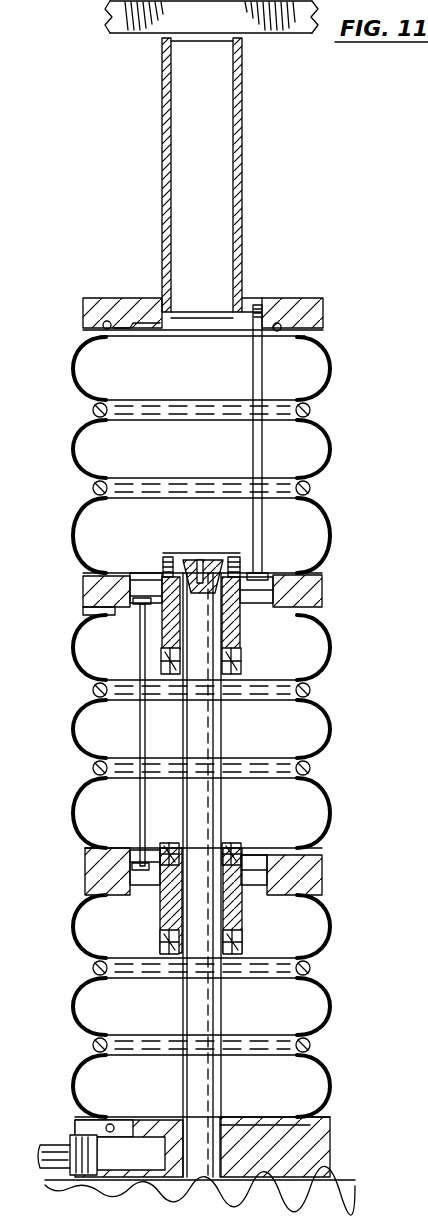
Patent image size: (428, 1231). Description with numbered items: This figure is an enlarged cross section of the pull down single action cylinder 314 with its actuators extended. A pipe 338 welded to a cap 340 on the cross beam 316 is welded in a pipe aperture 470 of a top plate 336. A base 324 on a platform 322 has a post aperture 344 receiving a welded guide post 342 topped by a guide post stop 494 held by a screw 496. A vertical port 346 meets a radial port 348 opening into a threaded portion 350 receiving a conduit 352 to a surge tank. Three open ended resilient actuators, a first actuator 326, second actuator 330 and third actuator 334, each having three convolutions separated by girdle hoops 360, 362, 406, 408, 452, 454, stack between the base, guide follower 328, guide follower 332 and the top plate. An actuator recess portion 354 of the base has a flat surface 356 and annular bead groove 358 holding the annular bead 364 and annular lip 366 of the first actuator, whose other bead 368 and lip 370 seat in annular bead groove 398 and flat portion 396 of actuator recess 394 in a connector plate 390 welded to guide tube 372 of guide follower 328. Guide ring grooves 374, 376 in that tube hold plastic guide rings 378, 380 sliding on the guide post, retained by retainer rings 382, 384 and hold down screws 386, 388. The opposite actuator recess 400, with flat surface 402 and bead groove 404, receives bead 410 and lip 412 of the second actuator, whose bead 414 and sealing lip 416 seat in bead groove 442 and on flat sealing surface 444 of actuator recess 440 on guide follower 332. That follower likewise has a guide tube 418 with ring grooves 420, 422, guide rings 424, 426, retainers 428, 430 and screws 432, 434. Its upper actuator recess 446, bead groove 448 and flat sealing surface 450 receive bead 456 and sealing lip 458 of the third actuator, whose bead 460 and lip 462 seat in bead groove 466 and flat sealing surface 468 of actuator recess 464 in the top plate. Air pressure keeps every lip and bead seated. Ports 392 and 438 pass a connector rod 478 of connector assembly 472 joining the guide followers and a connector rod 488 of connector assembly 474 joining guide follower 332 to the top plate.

The upper end assembly 314 is at (81, 297).
The upper support plate 316 is at (123, 28).
The base support 322 is at (346, 1184).
The base plate 324 is at (336, 1150).
The lower bellows section 326 is at (72, 1007).
The lower intermediate plate 328 is at (84, 849).
The middle bellows section 330 is at (76, 812).
The upper intermediate plate 332 is at (81, 592).
The upper bellows section 334 is at (76, 377).
The upper end plate 336 is at (81, 311).
The tube 338 is at (243, 101).
The tube upper end 340 is at (242, 38).
The central rod 342 is at (224, 1020).
The rod lower end 344 is at (221, 1156).
The base plate recess 346 is at (150, 1140).
The insert block 348 is at (131, 1153).
The seal 350 is at (110, 1127).
The fitting 352 is at (44, 1152).
The bellows lower end 354 is at (230, 1125).
The clamp ring 356 is at (288, 1125).
The bead 358 is at (328, 1125).
The girdle ring 360 is at (310, 1045).
The girdle ring 362 is at (310, 968).
The bellows lower bead 364 is at (108, 1122).
The clamp 366 is at (120, 1127).
The seal groove 368 is at (290, 893).
The bead 370 is at (285, 908).
The bore 372 is at (243, 896).
The bearing 374 is at (240, 940).
The bearing 376 is at (235, 862).
The bearing 378 is at (162, 940).
The sleeve 380 is at (210, 870).
The retainer 382 is at (164, 955).
The bearing 384 is at (165, 843).
The retainer 386 is at (236, 955).
The bushing 388 is at (235, 843).
The plate body 390 is at (311, 876).
The bellows bead 392 is at (303, 836).
The hub 394 is at (176, 886).
The recess 396 is at (130, 895).
The seal 398 is at (110, 890).
The clamp 400 is at (262, 848).
The groove 402 is at (105, 884).
The flange 404 is at (110, 858).
The girdle ring 406 is at (95, 768).
The girdle ring 408 is at (95, 690).
The clamp ring 410 is at (321, 855).
The bead 412 is at (115, 850).
The flange 414 is at (115, 604).
The bead 416 is at (120, 616).
The bore 418 is at (235, 605).
The girdle ring 420 is at (309, 690).
The housing 422 is at (201, 613).
The sleeve 424 is at (220, 698).
The bolt 426 is at (220, 556).
The bearing 428 is at (172, 695).
The bolt 430 is at (168, 556).
The bearing 432 is at (228, 660).
The nut 434 is at (167, 556).
The plate body 438 is at (266, 590).
The bore 440 is at (256, 605).
The seal 442 is at (293, 607).
The bead 444 is at (320, 626).
The clamp 446 is at (274, 573).
The clamp ring 448 is at (305, 570).
The seal 450 is at (147, 572).
The girdle ring 452 is at (309, 488).
The girdle ring 454 is at (311, 411).
The clamp ring 456 is at (110, 572).
The bead 458 is at (123, 572).
The end plate body 460 is at (323, 317).
The seal 462 is at (277, 323).
The bellows upper end 464 is at (180, 338).
The seal 466 is at (107, 321).
The bead 468 is at (128, 326).
The bore 470 is at (243, 299).
The guide rod 472 is at (135, 731).
The bellows wall 474 is at (266, 386).
The rod end 478 is at (139, 800).
The guide rod 488 is at (252, 388).
The rod foot 494 is at (244, 568).
The bolt 496 is at (200, 553).